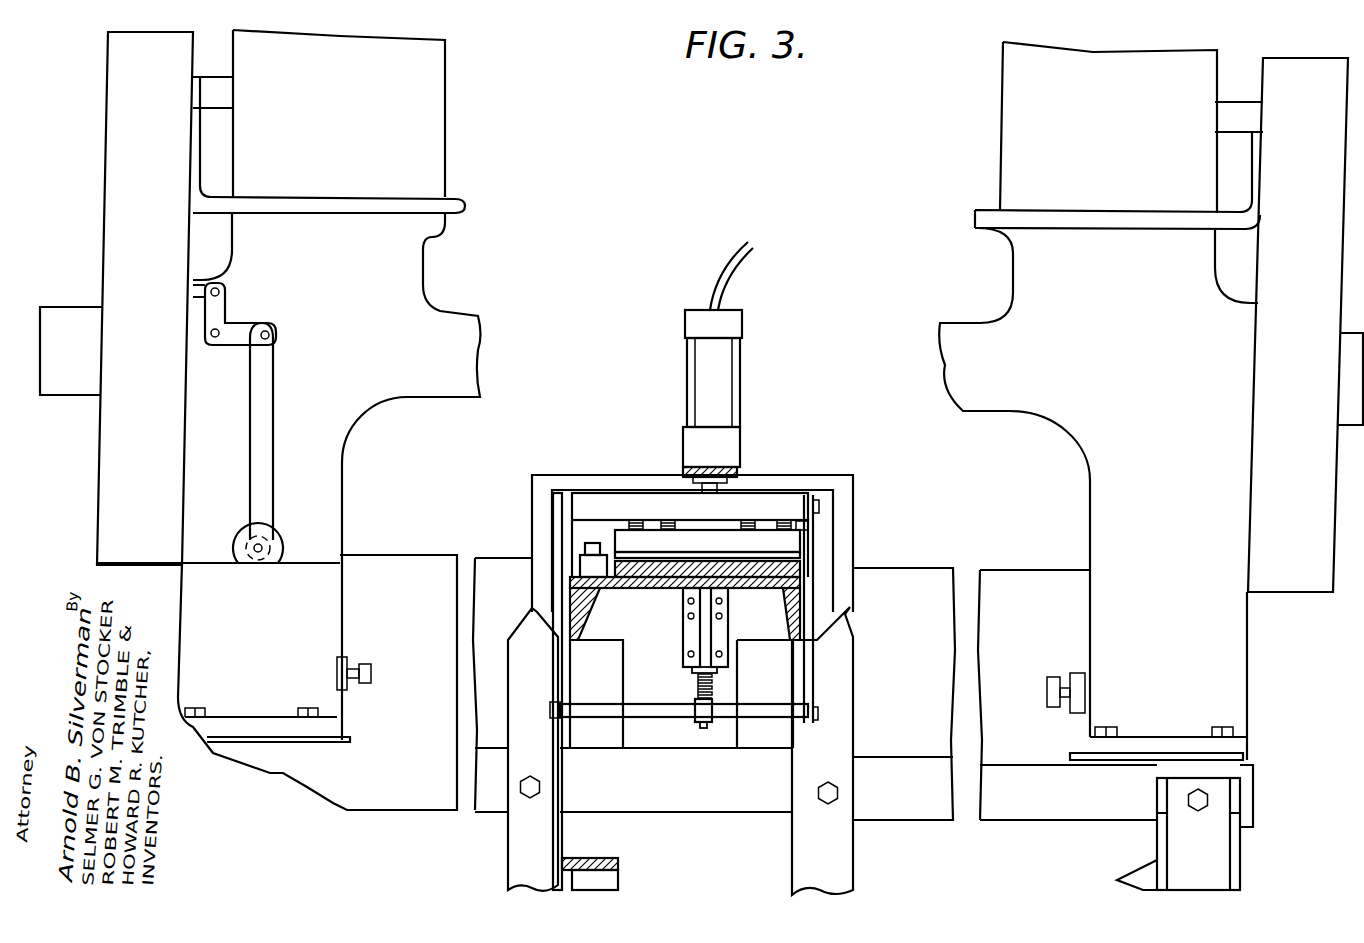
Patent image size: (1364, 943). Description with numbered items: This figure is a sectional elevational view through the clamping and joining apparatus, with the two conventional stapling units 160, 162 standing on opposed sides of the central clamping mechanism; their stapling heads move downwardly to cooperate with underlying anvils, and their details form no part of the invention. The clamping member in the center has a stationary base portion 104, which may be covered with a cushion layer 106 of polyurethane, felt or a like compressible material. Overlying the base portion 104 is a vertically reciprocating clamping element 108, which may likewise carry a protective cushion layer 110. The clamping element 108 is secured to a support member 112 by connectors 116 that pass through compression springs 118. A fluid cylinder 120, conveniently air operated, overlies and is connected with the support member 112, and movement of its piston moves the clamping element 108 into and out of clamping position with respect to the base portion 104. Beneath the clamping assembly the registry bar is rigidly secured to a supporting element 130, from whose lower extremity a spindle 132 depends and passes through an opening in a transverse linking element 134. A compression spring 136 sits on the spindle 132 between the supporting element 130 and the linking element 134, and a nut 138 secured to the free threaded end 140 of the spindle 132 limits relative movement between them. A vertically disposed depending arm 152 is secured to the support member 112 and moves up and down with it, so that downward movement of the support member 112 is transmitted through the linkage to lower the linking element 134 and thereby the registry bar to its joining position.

The base portion 104 is at (797, 590).
The cushion layer 106 is at (803, 570).
The clamping element 108 is at (803, 546).
The protective cushion layer 110 is at (803, 560).
The support member 112 is at (795, 503).
The connectors 116 is at (657, 521).
The compression springs 118 is at (790, 524).
The fluid cylinder 120 is at (752, 327).
The supporting element 130 is at (683, 626).
The spindle 132 is at (697, 690).
The linking element 134 is at (754, 706).
The compression spring 136 is at (697, 672).
The nut 138 is at (695, 714).
The free threaded end 140 is at (703, 729).
The depending arm 152 is at (813, 663).
The stapling unit 160 is at (976, 183).
The stapling unit 162 is at (468, 177).